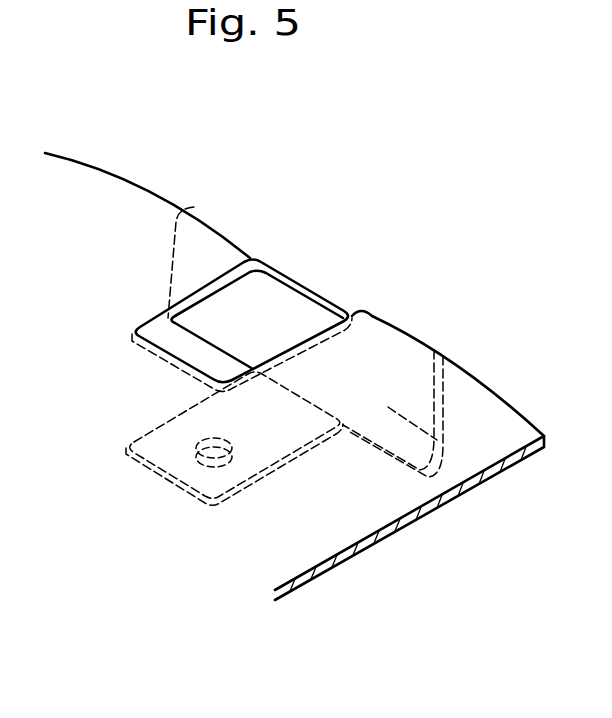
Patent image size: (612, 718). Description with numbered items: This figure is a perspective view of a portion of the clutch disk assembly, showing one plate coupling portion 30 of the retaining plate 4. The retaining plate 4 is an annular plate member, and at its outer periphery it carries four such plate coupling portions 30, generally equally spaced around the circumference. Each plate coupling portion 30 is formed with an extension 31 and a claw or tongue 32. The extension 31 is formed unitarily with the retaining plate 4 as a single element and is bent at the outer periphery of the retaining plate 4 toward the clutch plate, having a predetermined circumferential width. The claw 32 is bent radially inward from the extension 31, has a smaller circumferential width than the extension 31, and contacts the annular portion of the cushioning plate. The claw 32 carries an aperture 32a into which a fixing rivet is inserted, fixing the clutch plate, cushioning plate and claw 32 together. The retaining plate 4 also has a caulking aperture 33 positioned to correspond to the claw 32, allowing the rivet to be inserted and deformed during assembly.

The retaining plate 4 is at (475, 418).
The plate coupling portion 30 is at (388, 267).
The extension 31 is at (447, 441).
The claw 32 is at (258, 446).
The aperture 32a is at (206, 440).
The caulking aperture 33 is at (192, 296).